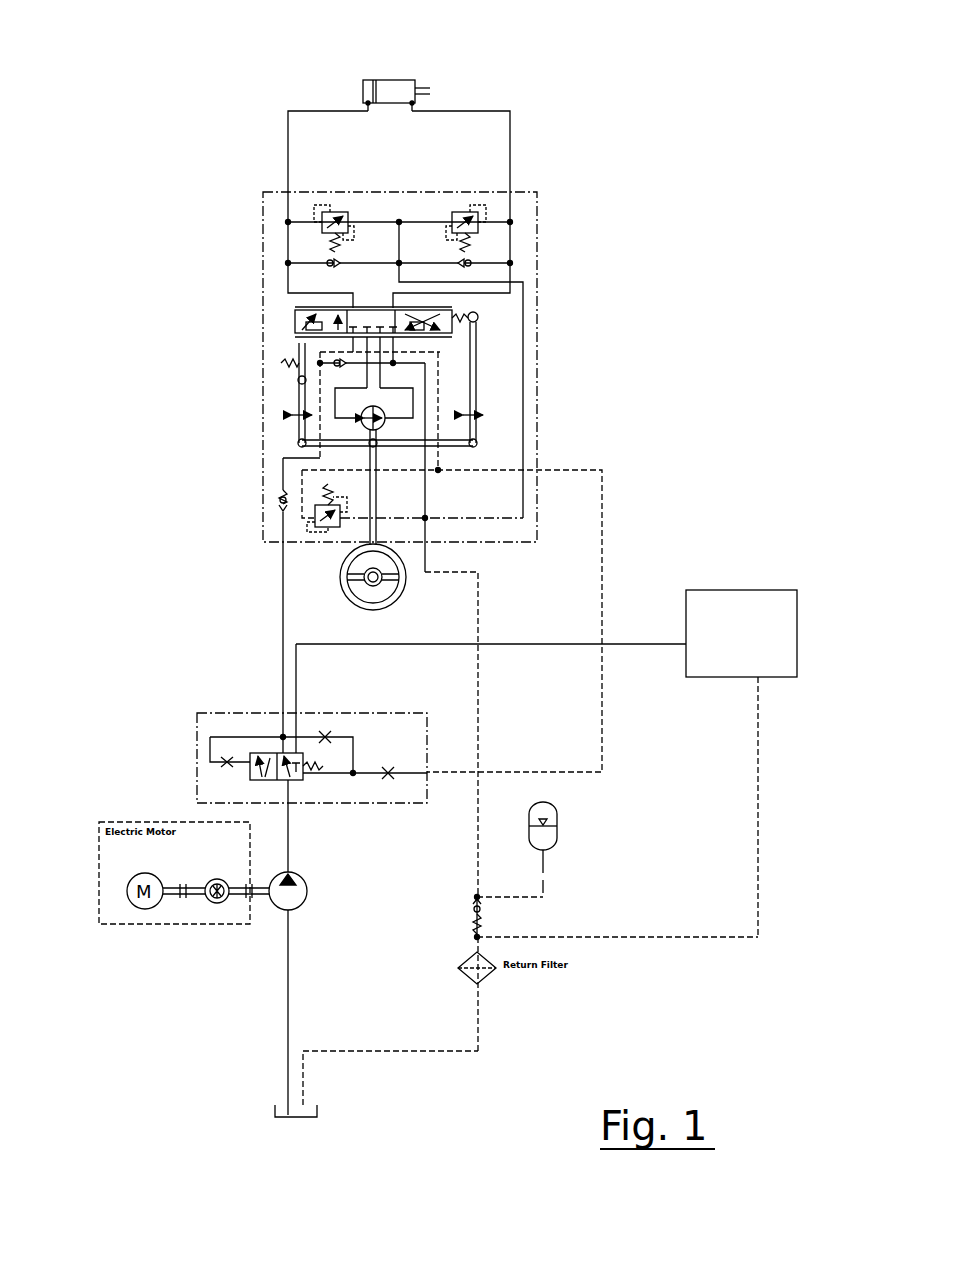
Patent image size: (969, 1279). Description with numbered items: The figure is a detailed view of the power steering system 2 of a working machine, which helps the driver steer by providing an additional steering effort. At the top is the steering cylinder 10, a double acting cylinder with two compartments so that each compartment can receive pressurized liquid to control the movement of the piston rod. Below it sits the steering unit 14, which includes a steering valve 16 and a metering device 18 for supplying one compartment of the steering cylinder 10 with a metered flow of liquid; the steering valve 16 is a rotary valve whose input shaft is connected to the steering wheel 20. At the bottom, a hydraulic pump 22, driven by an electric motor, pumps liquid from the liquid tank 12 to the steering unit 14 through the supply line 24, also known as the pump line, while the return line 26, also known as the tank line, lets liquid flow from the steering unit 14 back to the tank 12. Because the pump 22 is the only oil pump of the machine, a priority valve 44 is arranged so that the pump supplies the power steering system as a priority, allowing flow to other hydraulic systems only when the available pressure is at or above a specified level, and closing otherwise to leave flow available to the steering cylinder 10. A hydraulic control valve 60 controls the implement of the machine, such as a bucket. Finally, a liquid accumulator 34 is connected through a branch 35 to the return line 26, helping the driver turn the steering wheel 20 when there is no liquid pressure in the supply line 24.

The power steering system 2 is at (687, 180).
The steering cylinder 10 is at (365, 80).
The liquid tank 12 is at (295, 1117).
The steering unit 14 is at (263, 192).
The steering valve 16 is at (276, 323).
The metering device 18 is at (389, 428).
The steering wheel 20 is at (340, 577).
The hydraulic pump 22 is at (303, 897).
The supply line 24 is at (283, 655).
The return line 26 is at (478, 670).
The liquid accumulator 34 is at (557, 820).
The branch 35 is at (545, 893).
The priority valve 44 is at (363, 803).
The hydraulic control valve 60 is at (546, 763).